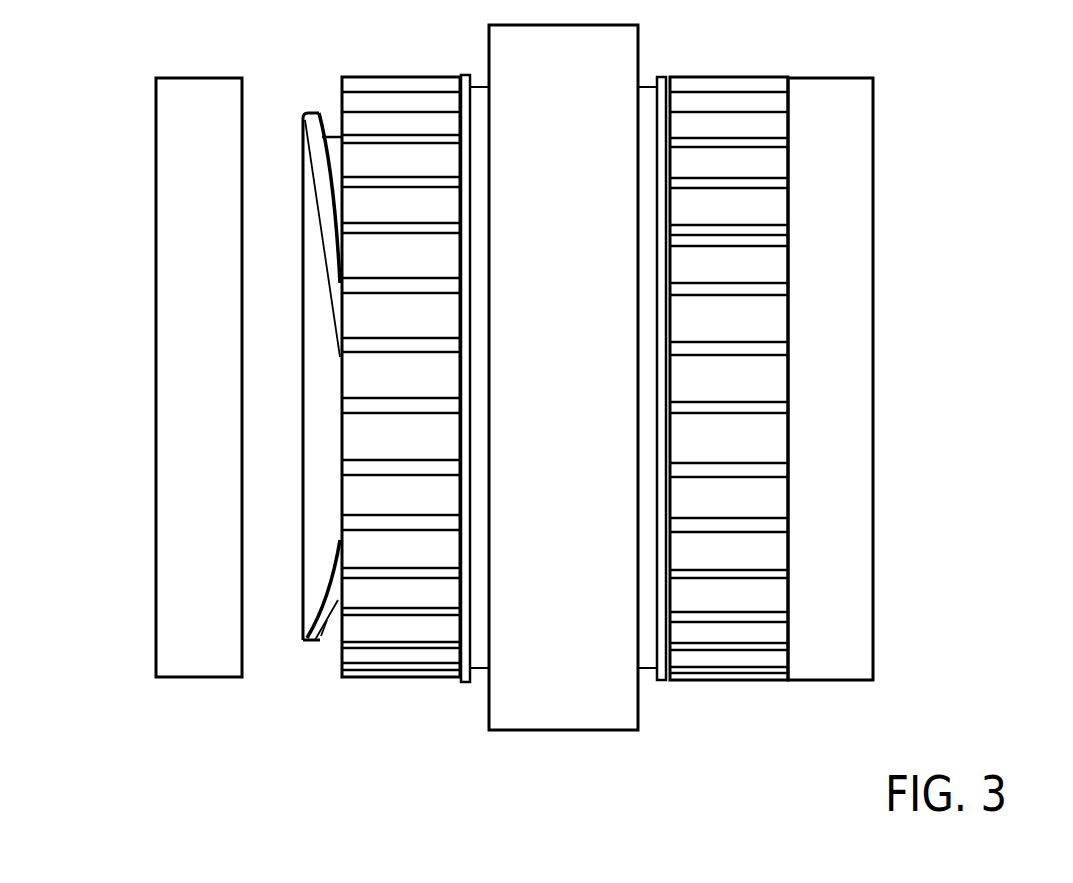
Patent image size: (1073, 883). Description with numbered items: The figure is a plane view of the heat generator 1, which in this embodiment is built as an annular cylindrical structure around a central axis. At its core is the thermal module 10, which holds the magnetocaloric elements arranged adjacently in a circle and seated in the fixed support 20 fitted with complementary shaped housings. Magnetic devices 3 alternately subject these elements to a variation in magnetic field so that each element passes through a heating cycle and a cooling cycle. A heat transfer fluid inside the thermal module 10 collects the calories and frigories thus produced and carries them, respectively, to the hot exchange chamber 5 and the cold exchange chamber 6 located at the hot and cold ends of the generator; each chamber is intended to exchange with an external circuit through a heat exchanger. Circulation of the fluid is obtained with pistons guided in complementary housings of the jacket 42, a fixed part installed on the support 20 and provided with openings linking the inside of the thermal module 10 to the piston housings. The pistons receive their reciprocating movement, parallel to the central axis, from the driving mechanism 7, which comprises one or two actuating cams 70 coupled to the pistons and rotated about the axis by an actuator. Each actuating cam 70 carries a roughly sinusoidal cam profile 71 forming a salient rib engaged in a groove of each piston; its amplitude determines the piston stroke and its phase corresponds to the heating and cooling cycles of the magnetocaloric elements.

The heat generator 1 is at (902, 128).
The magnetic devices 3 is at (525, 734).
The hot exchange chamber 5 is at (199, 232).
The cold exchange chamber 6 is at (853, 235).
The driving mechanism 7 is at (265, 460).
The thermal module 10 is at (658, 439).
The fixed support 20 is at (652, 666).
The jacket 42 is at (421, 630).
The actuating cam 70 is at (318, 645).
The cam profile 71 is at (308, 590).